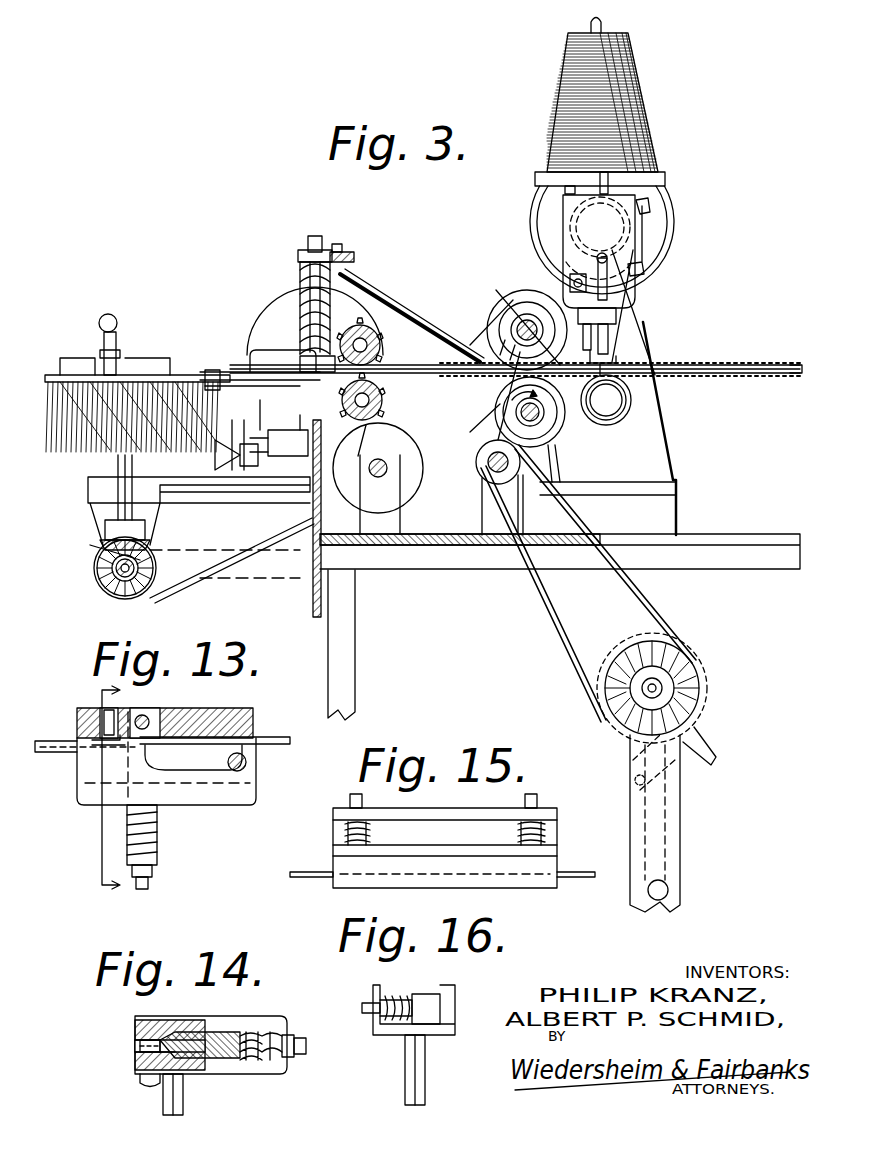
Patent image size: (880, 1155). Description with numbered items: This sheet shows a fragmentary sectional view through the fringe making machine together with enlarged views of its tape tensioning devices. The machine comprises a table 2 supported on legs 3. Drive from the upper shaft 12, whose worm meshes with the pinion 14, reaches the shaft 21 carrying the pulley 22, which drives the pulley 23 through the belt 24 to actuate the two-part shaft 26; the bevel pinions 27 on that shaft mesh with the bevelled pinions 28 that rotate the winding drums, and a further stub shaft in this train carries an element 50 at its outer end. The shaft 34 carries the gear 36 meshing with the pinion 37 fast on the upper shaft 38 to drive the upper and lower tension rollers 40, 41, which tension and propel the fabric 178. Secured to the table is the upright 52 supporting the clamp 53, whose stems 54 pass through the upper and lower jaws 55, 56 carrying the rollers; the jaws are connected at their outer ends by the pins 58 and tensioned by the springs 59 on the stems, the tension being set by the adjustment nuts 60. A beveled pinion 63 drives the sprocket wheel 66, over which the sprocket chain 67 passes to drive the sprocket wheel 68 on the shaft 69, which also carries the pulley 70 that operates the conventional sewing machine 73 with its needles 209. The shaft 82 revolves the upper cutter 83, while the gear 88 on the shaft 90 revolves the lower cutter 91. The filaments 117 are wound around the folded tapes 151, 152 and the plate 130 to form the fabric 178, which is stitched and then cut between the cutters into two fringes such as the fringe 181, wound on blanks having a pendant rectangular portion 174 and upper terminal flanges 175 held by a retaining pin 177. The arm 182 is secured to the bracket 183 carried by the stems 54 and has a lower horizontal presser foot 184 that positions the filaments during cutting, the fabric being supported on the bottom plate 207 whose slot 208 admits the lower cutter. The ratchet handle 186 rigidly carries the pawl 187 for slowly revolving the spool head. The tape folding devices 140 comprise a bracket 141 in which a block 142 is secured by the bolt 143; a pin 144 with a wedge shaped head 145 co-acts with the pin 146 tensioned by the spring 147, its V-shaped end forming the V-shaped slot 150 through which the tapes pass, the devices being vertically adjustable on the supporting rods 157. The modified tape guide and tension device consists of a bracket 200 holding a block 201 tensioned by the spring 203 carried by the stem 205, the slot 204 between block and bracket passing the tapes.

In FIG. 3, the table 2 is at (718, 540).
In FIG. 3, the legs 3 is at (344, 674).
In FIG. 3, the upper shaft 12 is at (660, 684).
In FIG. 13, the pinion 14 is at (94, 789).
In FIG. 3, the shaft 21 is at (390, 468).
In FIG. 3, the pulley 22 is at (412, 452).
In FIG. 3, the pulley 23 is at (130, 592).
In FIG. 3, the belt 24 is at (216, 556).
In FIG. 3, the two-part shaft 26 is at (95, 570).
In FIG. 3, the bevel pinions 27 is at (115, 580).
In FIG. 3, the bevelled pinions 28 is at (100, 544).
In FIG. 3, the shaft 34 is at (322, 440).
In FIG. 3, the gear 36 is at (385, 404).
In FIG. 3, the pinion 37 is at (374, 330).
In FIG. 3, the upper shaft 38 is at (377, 338).
In FIG. 3, the upper tension roller 40 is at (364, 326).
In FIG. 3, the lower tension roller 41 is at (384, 418).
In FIG. 3, the arc guide 50 is at (262, 312).
In FIG. 3, the upright 52 is at (310, 604).
In FIG. 3, the clamp 53 is at (261, 435).
In FIG. 3, the stems 54 is at (308, 244).
In FIG. 3, the upper jaw 55 is at (240, 362).
In FIG. 3, the lower jaw 56 is at (268, 352).
In FIG. 3, the pins 58 is at (214, 368).
In FIG. 3, the springs 59 is at (300, 300).
In FIG. 3, the adjustment nuts 60 is at (298, 256).
In FIG. 3, the beveled pinion 63 is at (705, 680).
In FIG. 3, the sprocket wheel 66 is at (625, 665).
In FIG. 3, the sprocket chain 67 is at (572, 618).
In FIG. 3, the sprocket wheel 68 is at (495, 488).
In FIG. 3, the shaft 69 is at (485, 472).
In FIG. 3, the pulley 70 is at (540, 458).
In FIG. 3, the sewing machine 73 is at (648, 365).
In FIG. 3, the shaft 82 is at (518, 322).
In FIG. 3, the upper cutter 83 is at (532, 320).
In FIG. 3, the gear 88 is at (708, 690).
In FIG. 3, the shaft 90 is at (556, 420).
In FIG. 3, the lower cutter 91 is at (495, 398).
In FIG. 3, the filaments 117 is at (656, 345).
In FIG. 3, the plate 130 is at (748, 378).
In FIG. 13, the tape folding devices 140 is at (70, 821).
In FIG. 14, the tape folding devices 140 is at (138, 1003).
In FIG. 13, the bracket 141 is at (160, 856).
In FIG. 14, the bracket 141 is at (292, 1070).
In FIG. 13, the block 142 is at (205, 716).
In FIG. 14, the block 142 is at (134, 1030).
In FIG. 14, the bolt 143 is at (150, 1085).
In FIG. 13, the pin 144 is at (90, 733).
In FIG. 14, the pin 144 is at (134, 1046).
In FIG. 13, the wedge shaped head 145 is at (108, 740).
In FIG. 14, the wedge shaped head 145 is at (140, 1062).
In FIG. 13, the pin 146 is at (210, 796).
In FIG. 14, the pin 146 is at (250, 1033).
In FIG. 14, the spring 147 is at (270, 1076).
In FIG. 14, the V-shaped slot 150 is at (188, 1033).
In FIG. 3, the tape 151 is at (745, 366).
In FIG. 15, the tape 151 is at (586, 878).
In FIG. 13, the tape 152 is at (276, 746).
In FIG. 14, the supporting rods 157 is at (184, 1104).
In FIG. 16, the supporting rods 157 is at (426, 1056).
In FIG. 3, the pendant rectangular portion 174 is at (78, 364).
In FIG. 3, the upper terminal flanges 175 is at (122, 360).
In FIG. 3, the retaining pin 177 is at (122, 306).
In FIG. 3, the fabric 178 is at (715, 362).
In FIG. 3, the fringe 181 is at (90, 455).
In FIG. 3, the arm 182 is at (458, 345).
In FIG. 3, the bracket 183 is at (338, 252).
In FIG. 3, the presser foot 184 is at (455, 352).
In FIG. 3, the ratchet handle 186 is at (667, 842).
In FIG. 3, the pawl 187 is at (716, 746).
In FIG. 15, the bracket 200 is at (440, 886).
In FIG. 16, the bracket 200 is at (456, 1020).
In FIG. 15, the block 201 is at (448, 840).
In FIG. 16, the block 201 is at (402, 1058).
In FIG. 15, the spring 203 is at (343, 828).
In FIG. 16, the spring 203 is at (400, 1036).
In FIG. 16, the slot 204 is at (442, 1004).
In FIG. 15, the stem 205 is at (362, 802).
In FIG. 16, the stem 205 is at (420, 996).
In FIG. 3, the bottom plate 207 is at (490, 410).
In FIG. 3, the slot 208 is at (627, 408).
In FIG. 3, the sewing machine needles 209 is at (620, 355).